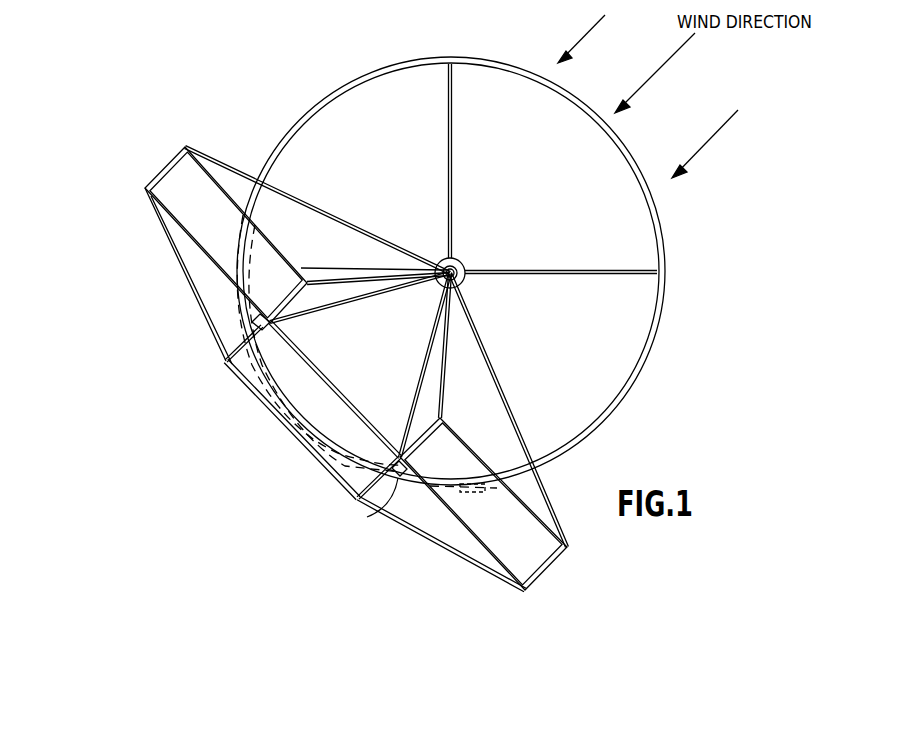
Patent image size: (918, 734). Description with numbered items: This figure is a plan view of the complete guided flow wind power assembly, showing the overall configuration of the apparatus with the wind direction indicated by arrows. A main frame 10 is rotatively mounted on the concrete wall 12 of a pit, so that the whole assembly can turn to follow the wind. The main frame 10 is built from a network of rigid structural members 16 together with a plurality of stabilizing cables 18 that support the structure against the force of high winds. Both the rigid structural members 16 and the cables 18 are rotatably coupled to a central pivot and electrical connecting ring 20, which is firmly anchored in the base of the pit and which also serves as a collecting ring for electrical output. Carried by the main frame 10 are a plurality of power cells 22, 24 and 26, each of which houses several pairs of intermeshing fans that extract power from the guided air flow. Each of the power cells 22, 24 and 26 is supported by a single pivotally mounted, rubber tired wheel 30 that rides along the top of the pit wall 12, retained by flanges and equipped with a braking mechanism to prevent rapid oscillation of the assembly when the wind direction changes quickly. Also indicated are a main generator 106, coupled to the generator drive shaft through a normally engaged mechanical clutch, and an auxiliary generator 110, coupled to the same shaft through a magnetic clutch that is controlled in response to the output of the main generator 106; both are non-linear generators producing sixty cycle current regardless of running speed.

The main frame 10 is at (128, 206).
The concrete wall 12 is at (643, 358).
The rigid structural members 16 is at (177, 227).
The stabilizing cables 18 is at (305, 204).
The central pivot and electrical connecting ring 20 is at (460, 261).
The power cell 22 is at (173, 169).
The power cell 24 is at (338, 472).
The power cell 26 is at (516, 571).
The rubber tired wheel 30 is at (284, 418).
The main generator 106 is at (256, 324).
The auxiliary generator 110 is at (360, 502).